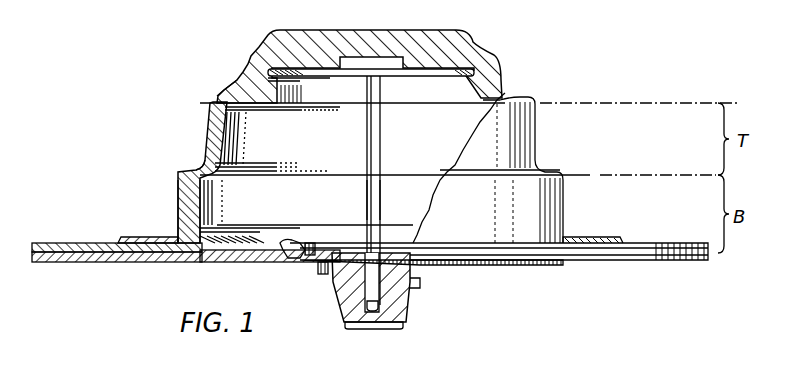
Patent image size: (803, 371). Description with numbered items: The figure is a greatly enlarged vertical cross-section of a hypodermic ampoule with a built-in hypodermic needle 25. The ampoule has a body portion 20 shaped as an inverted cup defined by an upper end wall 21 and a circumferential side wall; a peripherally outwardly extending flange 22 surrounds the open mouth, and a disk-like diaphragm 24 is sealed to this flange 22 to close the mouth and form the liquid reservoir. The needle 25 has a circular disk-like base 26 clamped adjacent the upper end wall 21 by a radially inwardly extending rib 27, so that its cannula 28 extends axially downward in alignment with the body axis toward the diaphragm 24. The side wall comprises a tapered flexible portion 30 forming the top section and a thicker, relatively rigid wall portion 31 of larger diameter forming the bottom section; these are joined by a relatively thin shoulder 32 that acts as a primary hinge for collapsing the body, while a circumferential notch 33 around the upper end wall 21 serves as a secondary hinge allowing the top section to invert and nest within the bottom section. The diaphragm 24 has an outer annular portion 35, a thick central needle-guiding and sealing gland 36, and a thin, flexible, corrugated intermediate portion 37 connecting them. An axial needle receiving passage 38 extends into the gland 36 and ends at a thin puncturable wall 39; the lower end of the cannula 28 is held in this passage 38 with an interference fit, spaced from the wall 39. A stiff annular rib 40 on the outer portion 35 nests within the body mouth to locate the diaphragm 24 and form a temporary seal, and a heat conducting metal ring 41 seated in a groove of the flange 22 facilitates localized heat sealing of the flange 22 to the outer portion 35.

The body portion 20 is at (519, 139).
The upper end wall 21 is at (327, 34).
The flange 22 is at (71, 242).
The diaphragm 24 is at (500, 276).
The hypodermic needle 25 is at (390, 137).
The base 26 is at (340, 82).
The rib 27 is at (289, 104).
The cannula 28 is at (373, 199).
The flexible portion 30 is at (211, 117).
The rigid wall portion 31 is at (187, 213).
The shoulder 32 is at (203, 167).
The circumferential notch 33 is at (231, 90).
The outer annular portion 35 is at (71, 262).
The gland 36 is at (340, 297).
The intermediate portion 37 is at (288, 243).
The needle receiving passage 38 is at (398, 298).
The puncturable wall 39 is at (376, 322).
The annular rib 40 is at (218, 232).
The metal ring 41 is at (132, 262).